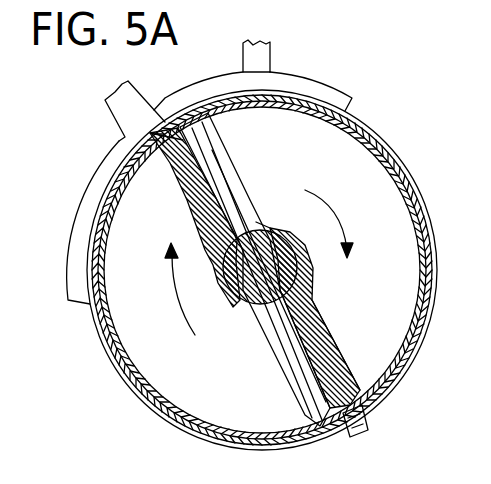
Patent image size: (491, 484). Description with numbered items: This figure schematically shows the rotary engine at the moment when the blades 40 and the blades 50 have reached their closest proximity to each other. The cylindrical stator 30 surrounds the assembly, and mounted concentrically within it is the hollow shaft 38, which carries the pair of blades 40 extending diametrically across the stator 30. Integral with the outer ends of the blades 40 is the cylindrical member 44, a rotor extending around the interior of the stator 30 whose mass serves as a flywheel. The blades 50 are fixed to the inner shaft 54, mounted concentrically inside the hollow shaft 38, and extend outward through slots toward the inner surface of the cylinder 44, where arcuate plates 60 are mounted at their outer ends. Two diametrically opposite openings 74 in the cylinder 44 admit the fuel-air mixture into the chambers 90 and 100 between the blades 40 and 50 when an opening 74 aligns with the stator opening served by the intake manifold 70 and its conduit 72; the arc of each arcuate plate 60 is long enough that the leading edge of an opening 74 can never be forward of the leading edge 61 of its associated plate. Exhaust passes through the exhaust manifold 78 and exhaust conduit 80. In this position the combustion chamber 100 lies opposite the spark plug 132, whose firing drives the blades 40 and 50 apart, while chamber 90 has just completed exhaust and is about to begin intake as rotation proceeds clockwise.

The stator 30 is at (277, 270).
The hollow shaft 38 is at (282, 214).
The blades 40 is at (245, 270).
The cylindrical member 44 is at (262, 270).
The blades 50 is at (255, 269).
The shaft 54 is at (245, 270).
The arcuate plates 60 is at (203, 420).
The leading edge 61 is at (160, 402).
The intake manifold 70 is at (315, 81).
The conduit 72 is at (283, 49).
The openings 74 is at (212, 90).
The exhaust manifold 78 is at (79, 222).
The exhaust conduit 80 is at (109, 111).
The chamber 90 is at (156, 167).
The combustion chamber 100 is at (355, 345).
The spark plug 132 is at (389, 421).